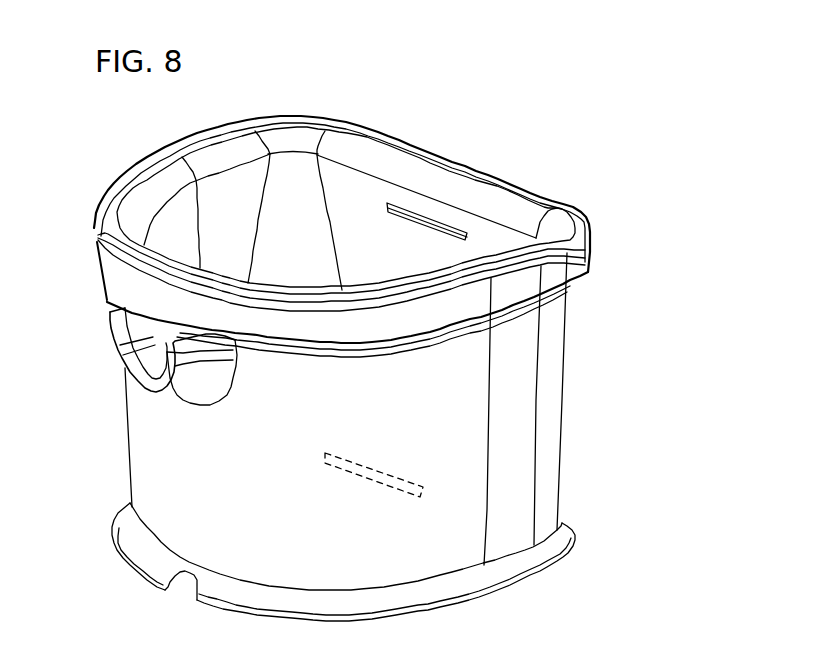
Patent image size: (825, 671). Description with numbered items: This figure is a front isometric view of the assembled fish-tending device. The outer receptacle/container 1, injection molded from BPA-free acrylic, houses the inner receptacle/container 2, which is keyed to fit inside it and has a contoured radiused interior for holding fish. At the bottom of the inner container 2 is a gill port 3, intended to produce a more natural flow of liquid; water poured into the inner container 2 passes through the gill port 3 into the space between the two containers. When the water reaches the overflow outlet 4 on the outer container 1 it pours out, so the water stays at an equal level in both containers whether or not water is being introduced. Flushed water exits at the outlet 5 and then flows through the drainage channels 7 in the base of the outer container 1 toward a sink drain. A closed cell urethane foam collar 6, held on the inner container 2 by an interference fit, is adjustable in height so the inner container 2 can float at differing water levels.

The outer receptacle/container 1 is at (562, 387).
The inner receptacle/container 2 is at (333, 137).
The gill port 3 is at (423, 490).
The overflow outlet 4 is at (430, 218).
The outlet 5 is at (123, 368).
The closed cell urethane foam collar 6 is at (537, 282).
The drainage channels 7 is at (167, 590).